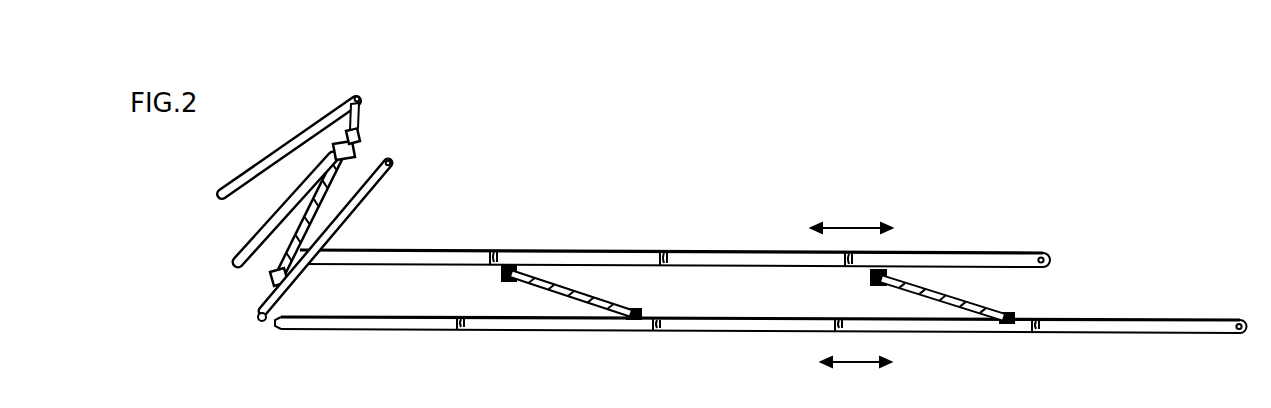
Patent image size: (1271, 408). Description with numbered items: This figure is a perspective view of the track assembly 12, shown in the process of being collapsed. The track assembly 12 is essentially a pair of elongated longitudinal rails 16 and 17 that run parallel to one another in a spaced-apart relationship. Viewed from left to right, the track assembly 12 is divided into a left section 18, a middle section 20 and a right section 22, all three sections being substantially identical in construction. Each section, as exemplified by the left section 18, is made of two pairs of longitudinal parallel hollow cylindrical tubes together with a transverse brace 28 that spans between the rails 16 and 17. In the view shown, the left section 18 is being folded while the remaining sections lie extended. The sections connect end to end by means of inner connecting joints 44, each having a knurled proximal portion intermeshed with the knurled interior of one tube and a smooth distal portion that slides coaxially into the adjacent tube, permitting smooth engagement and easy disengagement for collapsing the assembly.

The track assembly 12 is at (782, 68).
The rail 16 is at (485, 328).
The rail 17 is at (440, 250).
The left section 18 is at (263, 332).
The middle section 20 is at (645, 333).
The right section 22 is at (1021, 338).
The transverse brace 28 is at (572, 284).
The inner connecting joint 44 is at (363, 127).